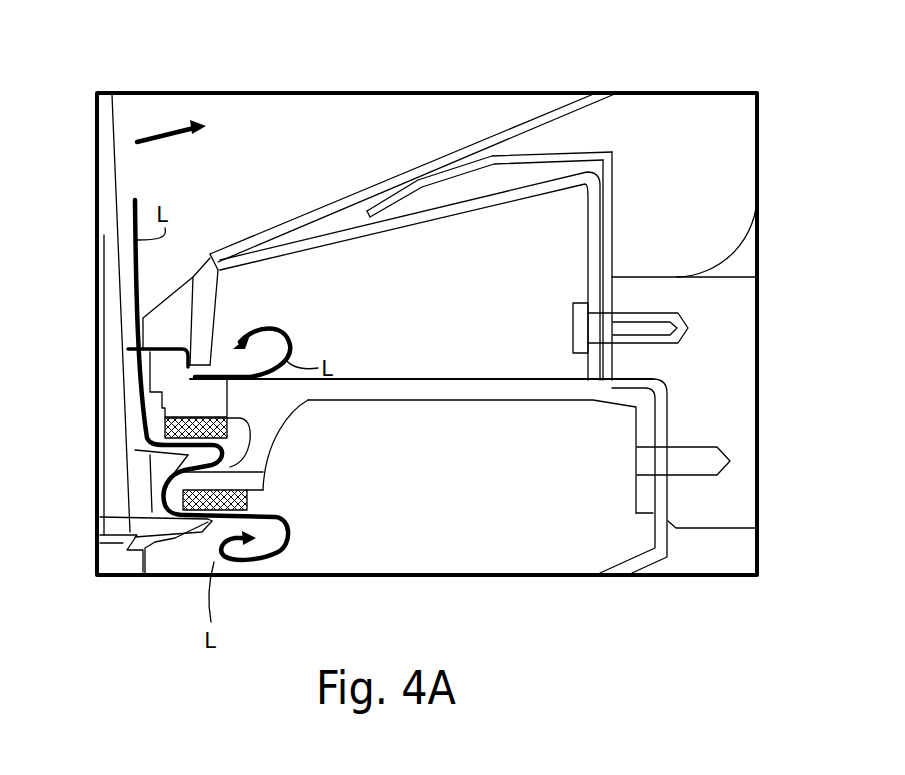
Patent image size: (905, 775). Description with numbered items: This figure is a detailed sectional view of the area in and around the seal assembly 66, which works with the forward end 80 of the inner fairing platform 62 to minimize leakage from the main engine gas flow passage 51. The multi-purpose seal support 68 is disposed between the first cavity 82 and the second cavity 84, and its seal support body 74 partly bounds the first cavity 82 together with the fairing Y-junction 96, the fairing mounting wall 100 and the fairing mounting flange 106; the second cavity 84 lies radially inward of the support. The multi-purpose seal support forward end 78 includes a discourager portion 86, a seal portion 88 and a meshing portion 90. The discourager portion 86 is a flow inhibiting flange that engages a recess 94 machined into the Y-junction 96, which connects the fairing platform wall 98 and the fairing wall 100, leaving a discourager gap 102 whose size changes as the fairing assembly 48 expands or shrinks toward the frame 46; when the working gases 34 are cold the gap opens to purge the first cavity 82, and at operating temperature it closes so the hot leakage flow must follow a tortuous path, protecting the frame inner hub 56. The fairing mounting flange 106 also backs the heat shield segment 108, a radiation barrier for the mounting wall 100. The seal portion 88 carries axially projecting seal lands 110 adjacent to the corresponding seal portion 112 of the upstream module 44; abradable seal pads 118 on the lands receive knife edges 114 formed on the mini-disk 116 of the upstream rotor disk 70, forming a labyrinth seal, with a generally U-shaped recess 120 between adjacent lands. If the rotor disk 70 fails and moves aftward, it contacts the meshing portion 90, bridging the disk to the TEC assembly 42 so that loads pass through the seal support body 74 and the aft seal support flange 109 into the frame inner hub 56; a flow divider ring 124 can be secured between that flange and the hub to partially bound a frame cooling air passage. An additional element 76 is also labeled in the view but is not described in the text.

The working gases 34 is at (165, 135).
The TEC assembly 42 is at (716, 58).
The upstream module 44 is at (94, 197).
The frame 46 is at (770, 274).
The fairing assembly 48 is at (508, 220).
The main engine gas flow passage 51 is at (327, 139).
The frame inner hub 56 is at (699, 377).
The inner fairing platform 62 is at (333, 192).
The seal assembly 66 is at (305, 528).
The multi-purpose seal support 68 is at (524, 374).
The upstream rotor disk 70 is at (113, 580).
The seal support element body 74 is at (462, 388).
The inner wall 76 is at (613, 424).
The multi-purpose seal support forward end 78 is at (143, 372).
The forward end of inner fairing platform 80 is at (194, 274).
The first cavity 82 is at (445, 340).
The second cavity 84 is at (452, 527).
The discourager portion 86 is at (178, 392).
The seal portion 88 is at (278, 484).
The meshing portion 90 is at (132, 432).
The recess 94 is at (190, 327).
The fairing Y-junction 96 is at (287, 250).
The fairing platform wall 98 is at (560, 110).
The fairing mounting wall 100 is at (410, 226).
The discourager gap 102 is at (173, 343).
The fairing mounting flange 106 is at (587, 232).
The heat shield segment 108 is at (613, 165).
The aft seal support flange 109 is at (645, 498).
The seal land 110 is at (228, 409).
The seal portion on upstream module 112 is at (133, 438).
The knife edges 114 is at (112, 512).
The mini-disk 116 is at (130, 547).
The abradable seal pads 118 is at (262, 433).
The U-shaped recess 120 is at (230, 452).
The flow divider ring 124 is at (637, 563).